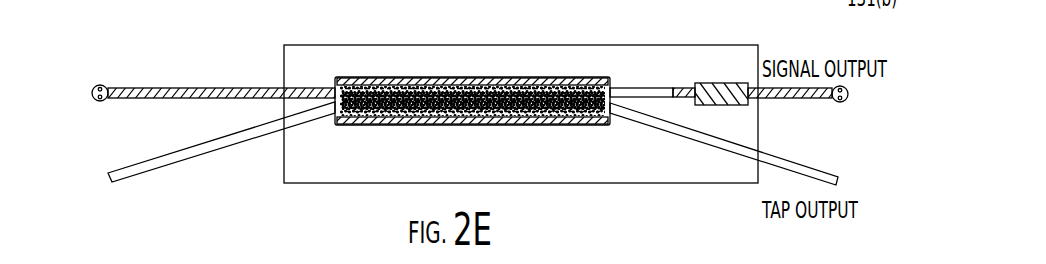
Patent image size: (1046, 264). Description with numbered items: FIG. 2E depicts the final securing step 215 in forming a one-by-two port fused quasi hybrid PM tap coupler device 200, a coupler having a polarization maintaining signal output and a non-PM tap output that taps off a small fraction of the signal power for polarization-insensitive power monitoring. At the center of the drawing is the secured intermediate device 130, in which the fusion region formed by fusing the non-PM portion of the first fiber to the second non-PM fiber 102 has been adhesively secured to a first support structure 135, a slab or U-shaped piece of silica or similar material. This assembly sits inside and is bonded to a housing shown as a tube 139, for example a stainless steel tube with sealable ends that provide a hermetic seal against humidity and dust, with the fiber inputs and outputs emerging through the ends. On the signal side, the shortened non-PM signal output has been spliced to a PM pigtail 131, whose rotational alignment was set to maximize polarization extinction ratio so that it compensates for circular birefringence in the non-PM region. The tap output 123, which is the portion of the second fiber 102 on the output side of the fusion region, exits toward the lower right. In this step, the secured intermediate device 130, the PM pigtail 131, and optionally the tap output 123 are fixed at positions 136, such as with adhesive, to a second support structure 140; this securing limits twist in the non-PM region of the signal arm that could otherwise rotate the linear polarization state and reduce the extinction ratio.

The securing step 215 is at (73, 150).
The second non-PM fiber 102 is at (187, 149).
The fused quasi hybrid PM tap coupler device 200 is at (228, 179).
The second support structure 140 is at (305, 58).
The tube 139 is at (442, 88).
The first support structure 135 is at (556, 92).
The secured intermediate device 130 is at (386, 139).
The PM pigtail 131 is at (817, 88).
The tap output 123 is at (746, 158).
The positions 136 is at (725, 114).